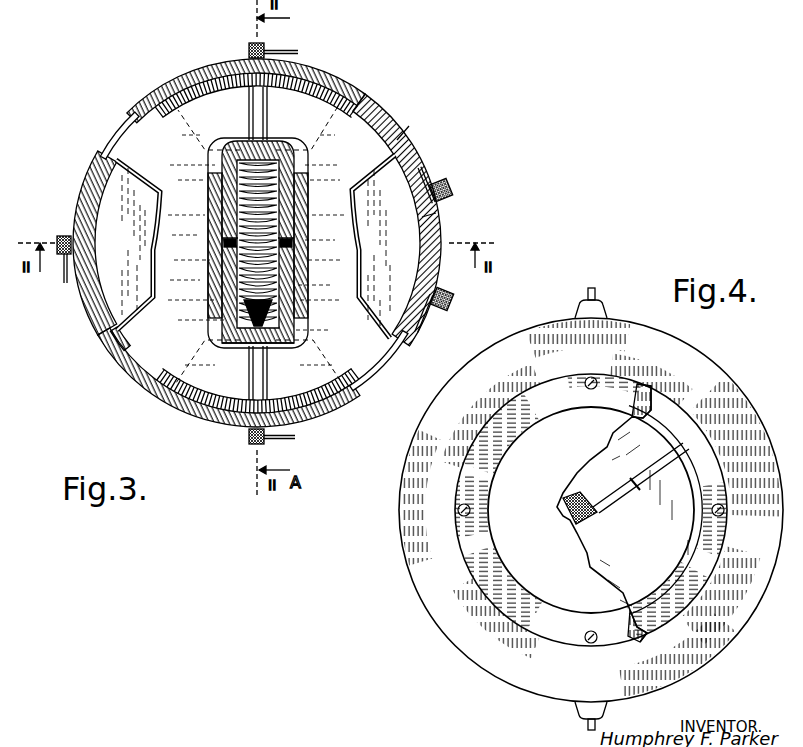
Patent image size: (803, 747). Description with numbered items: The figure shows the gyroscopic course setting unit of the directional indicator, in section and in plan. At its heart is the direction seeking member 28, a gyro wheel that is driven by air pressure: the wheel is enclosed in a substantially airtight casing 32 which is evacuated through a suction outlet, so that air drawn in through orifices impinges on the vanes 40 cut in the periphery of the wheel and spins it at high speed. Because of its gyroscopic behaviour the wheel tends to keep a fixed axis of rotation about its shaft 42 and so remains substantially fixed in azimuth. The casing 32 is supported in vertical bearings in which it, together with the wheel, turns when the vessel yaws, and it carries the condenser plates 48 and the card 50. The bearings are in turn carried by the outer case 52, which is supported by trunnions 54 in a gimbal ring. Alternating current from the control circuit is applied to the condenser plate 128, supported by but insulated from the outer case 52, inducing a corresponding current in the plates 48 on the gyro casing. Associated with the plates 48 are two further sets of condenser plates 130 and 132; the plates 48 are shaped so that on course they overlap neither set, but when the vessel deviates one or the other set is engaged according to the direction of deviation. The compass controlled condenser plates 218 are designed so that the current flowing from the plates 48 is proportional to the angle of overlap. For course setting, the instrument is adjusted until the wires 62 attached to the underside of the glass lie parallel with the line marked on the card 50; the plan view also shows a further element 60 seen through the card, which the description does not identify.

In FIG. 3, the condenser plate 128 is at (307, 87).
In FIG. 3, the condenser plates 132 is at (400, 167).
In FIG. 3, the condenser plates 130 is at (410, 277).
In FIG. 3, the compass controlled condenser plates 218 is at (110, 284).
In FIG. 3, the outer case 52 is at (140, 113).
In FIG. 3, the condenser plates 48 is at (358, 350).
In FIG. 3, the vanes 40 is at (240, 193).
In FIG. 3, the casing 32 is at (310, 158).
In FIG. 3, the direction seeking member 28 is at (286, 273).
In FIG. 3, the shaft 42 is at (300, 223).
In FIG. 4, the trunnions 54 is at (600, 293).
In FIG. 4, the card 50 is at (660, 552).
In FIG. 4, the rod 60 is at (632, 488).
In FIG. 4, the wires 62 is at (598, 470).